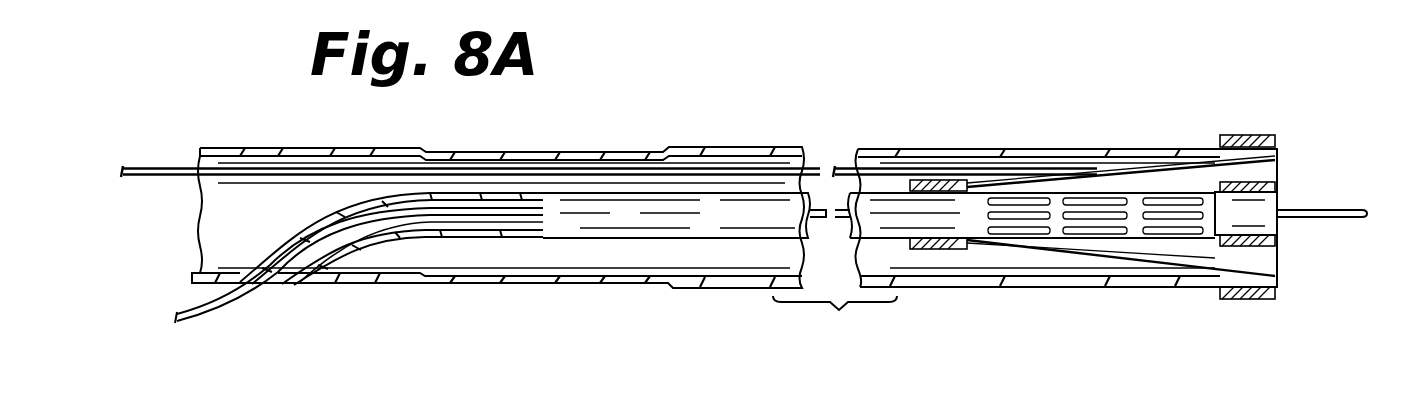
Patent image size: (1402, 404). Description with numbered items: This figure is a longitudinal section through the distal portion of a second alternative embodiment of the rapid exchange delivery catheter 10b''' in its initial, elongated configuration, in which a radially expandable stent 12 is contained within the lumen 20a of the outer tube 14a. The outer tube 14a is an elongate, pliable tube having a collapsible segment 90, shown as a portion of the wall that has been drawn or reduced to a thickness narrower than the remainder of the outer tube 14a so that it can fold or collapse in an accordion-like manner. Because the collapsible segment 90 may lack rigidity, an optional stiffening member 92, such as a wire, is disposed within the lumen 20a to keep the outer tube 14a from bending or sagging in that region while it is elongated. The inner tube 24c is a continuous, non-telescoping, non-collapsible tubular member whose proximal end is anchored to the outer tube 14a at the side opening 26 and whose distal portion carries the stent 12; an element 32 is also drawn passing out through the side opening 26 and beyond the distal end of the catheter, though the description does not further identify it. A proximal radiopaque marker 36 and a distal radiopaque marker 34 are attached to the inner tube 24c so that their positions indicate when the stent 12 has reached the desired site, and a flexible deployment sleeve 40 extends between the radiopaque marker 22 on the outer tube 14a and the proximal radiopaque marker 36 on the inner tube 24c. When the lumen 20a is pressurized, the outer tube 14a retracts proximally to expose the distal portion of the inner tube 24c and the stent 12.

The lumen 20a is at (205, 218).
The stiffening member 92 is at (151, 167).
The collapsible segment 90 is at (578, 150).
The side opening 26 is at (290, 288).
The guide wire 32 is at (227, 310).
The inner tube 24c is at (725, 220).
The outer tube 14a is at (763, 147).
The rapid exchange delivery catheter 10b''' is at (1067, 165).
The proximal radiopaque marker 36 is at (969, 183).
The deployment sleeve 40 is at (1063, 258).
The stent 12 is at (1137, 225).
The radiopaque marker 22 is at (1251, 134).
The distal radiopaque marker 34 is at (1282, 256).